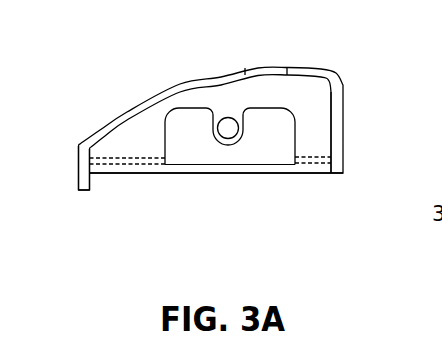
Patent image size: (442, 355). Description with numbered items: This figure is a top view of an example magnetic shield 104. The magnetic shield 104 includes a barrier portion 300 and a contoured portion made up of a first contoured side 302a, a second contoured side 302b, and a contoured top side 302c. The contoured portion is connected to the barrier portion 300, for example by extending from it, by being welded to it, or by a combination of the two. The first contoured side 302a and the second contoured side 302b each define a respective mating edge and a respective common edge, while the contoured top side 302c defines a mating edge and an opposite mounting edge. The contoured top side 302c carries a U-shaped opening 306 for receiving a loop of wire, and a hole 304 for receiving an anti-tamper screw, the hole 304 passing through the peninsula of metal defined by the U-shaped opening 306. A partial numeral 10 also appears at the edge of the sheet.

The barrier portion 300 is at (244, 69).
The magnetic shield 104 is at (83, 143).
The first contoured side 302a is at (83, 182).
The second contoured side 302b is at (332, 158).
The contoured top side 302c is at (155, 168).
The hole 304 is at (228, 126).
The U-shaped opening 306 is at (268, 148).
The hanger assembly 10 is at (429, 20).